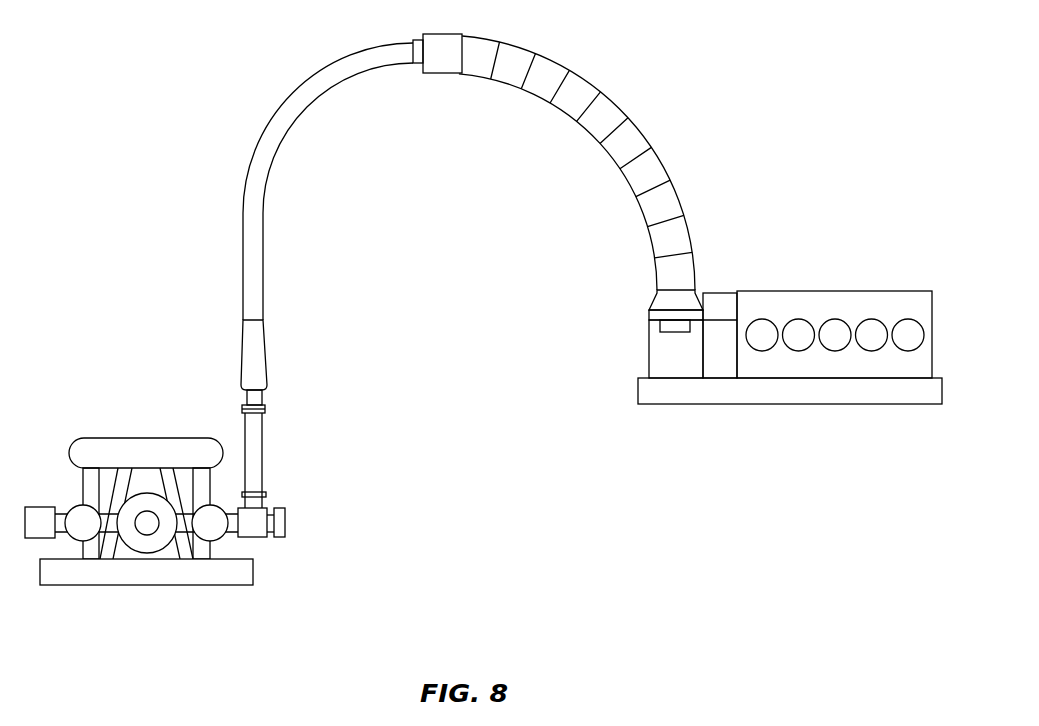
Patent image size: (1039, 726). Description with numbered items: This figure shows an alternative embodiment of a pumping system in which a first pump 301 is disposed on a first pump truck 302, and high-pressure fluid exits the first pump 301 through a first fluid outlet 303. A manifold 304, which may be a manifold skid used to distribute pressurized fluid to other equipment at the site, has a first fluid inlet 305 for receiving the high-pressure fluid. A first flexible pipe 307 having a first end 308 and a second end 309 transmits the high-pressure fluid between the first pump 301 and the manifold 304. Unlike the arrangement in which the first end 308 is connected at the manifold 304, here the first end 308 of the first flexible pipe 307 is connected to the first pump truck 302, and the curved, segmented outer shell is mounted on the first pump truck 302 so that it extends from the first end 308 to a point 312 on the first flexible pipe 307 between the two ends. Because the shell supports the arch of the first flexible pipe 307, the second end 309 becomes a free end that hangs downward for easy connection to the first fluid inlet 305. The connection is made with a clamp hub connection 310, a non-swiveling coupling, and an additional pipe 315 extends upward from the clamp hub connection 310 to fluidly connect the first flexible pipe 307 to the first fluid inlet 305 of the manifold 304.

The first pump 301 is at (835, 290).
The first pump truck 302 is at (788, 405).
The first fluid outlet 303 is at (647, 348).
The manifold 304 is at (117, 587).
The first fluid inlet 305 is at (216, 532).
The first flexible pipe 307 is at (300, 85).
The first end 308 is at (647, 313).
The second end 309 is at (242, 360).
The clamp hub connection 310 is at (255, 538).
The point 312 is at (422, 35).
The additional pipe 315 is at (263, 453).